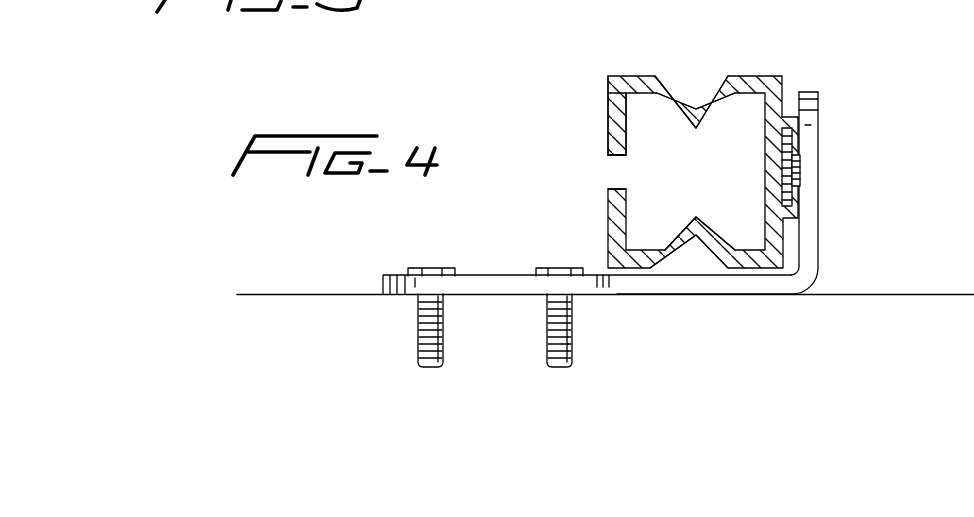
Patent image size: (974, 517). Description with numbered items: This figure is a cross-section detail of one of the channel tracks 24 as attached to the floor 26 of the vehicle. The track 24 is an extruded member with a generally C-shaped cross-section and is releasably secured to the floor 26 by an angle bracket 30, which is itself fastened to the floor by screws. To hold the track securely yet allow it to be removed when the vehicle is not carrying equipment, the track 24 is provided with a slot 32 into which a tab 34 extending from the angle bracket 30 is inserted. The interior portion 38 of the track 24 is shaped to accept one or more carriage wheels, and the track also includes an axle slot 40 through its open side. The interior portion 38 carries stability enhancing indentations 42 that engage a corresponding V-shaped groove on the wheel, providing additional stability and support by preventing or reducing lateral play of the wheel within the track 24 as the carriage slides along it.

The channel track 24 is at (666, 178).
The floor 26 is at (893, 293).
The angle bracket 30 is at (808, 240).
The slot 32 is at (790, 117).
The tab 34 is at (800, 163).
The interior portion 38 is at (645, 103).
The axle slot 40 is at (615, 173).
The stability enhancing indentation 42 is at (695, 106).